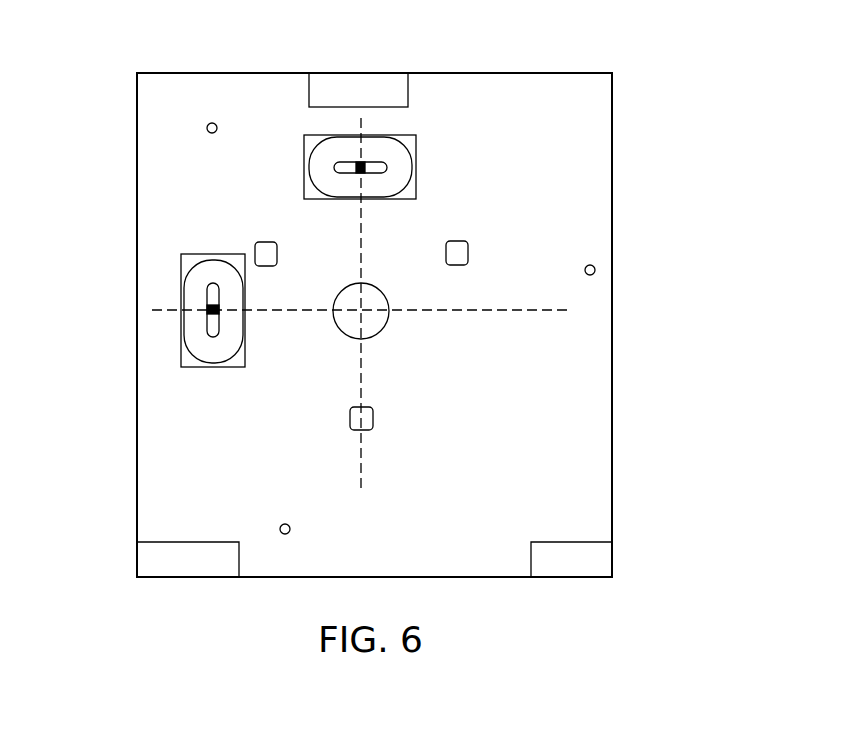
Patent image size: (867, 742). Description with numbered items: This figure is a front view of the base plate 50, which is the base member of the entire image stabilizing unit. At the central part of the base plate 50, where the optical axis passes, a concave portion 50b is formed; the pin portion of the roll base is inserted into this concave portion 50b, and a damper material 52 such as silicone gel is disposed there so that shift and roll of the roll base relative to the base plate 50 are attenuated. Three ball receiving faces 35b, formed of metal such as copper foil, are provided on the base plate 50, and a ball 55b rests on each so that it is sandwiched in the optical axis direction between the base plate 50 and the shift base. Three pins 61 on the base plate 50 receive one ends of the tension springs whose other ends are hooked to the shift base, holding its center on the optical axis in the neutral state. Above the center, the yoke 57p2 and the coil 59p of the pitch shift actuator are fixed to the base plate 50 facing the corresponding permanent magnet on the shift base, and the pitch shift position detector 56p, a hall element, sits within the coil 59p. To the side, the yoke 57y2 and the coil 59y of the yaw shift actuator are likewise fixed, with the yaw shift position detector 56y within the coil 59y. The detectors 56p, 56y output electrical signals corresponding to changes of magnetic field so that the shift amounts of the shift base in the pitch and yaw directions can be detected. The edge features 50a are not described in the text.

The base plate 50 is at (155, 80).
The notch 50a is at (393, 72).
The concave portion 50b is at (381, 330).
The damper material 52 is at (382, 302).
The pin 61 is at (207, 128).
The yoke 57p2 is at (416, 143).
The coil 59p is at (317, 148).
The pitch shift position detector 56p is at (358, 163).
The yoke 57y2 is at (181, 268).
The coil 59y is at (193, 338).
The yaw shift position detector 56y is at (213, 310).
The ball receiving face 35b is at (264, 242).
The ball 55b is at (263, 254).